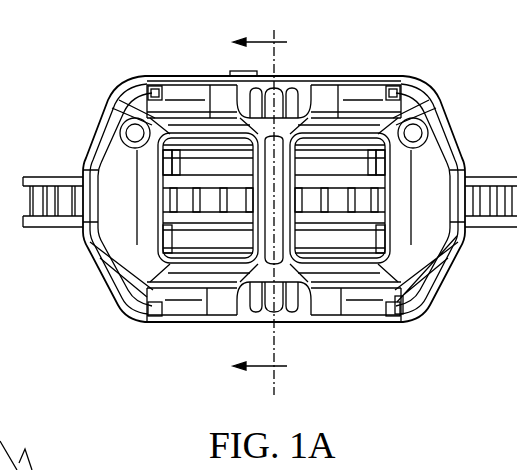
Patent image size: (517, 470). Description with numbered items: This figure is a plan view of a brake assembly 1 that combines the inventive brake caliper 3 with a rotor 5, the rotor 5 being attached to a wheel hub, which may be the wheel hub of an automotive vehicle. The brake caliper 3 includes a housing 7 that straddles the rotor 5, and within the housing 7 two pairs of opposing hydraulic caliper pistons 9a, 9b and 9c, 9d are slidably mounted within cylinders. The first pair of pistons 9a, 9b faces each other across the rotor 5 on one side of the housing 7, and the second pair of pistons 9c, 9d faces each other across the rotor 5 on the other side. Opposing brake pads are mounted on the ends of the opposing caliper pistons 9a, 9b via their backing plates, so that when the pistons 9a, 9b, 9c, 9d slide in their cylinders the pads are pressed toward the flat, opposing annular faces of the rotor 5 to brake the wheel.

The brake assembly 1 is at (258, 240).
The brake caliper 3 is at (452, 118).
The rotor 5 is at (491, 232).
The housing 7 is at (428, 312).
The hydraulic caliper piston 9a is at (222, 93).
The hydraulic caliper piston 9b is at (323, 90).
The hydraulic caliper piston 9c is at (220, 308).
The hydraulic caliper piston 9d is at (325, 310).